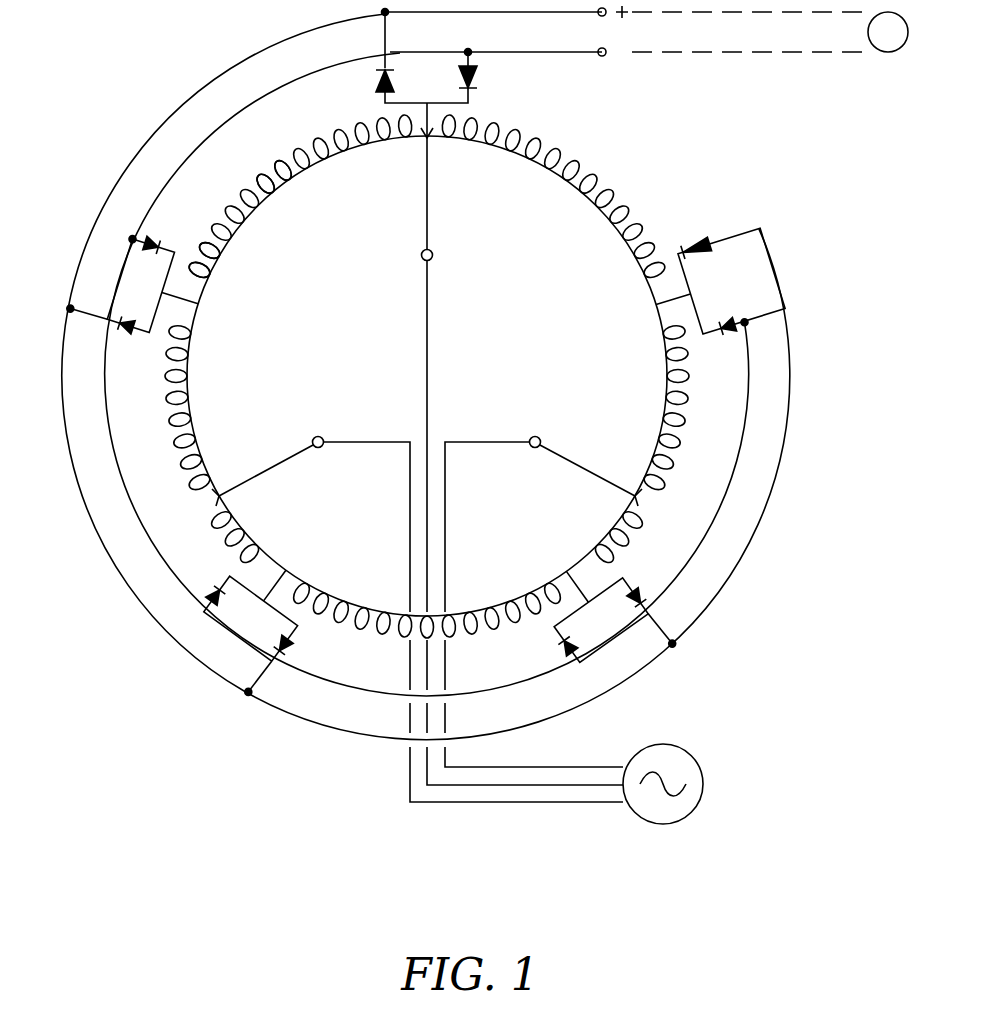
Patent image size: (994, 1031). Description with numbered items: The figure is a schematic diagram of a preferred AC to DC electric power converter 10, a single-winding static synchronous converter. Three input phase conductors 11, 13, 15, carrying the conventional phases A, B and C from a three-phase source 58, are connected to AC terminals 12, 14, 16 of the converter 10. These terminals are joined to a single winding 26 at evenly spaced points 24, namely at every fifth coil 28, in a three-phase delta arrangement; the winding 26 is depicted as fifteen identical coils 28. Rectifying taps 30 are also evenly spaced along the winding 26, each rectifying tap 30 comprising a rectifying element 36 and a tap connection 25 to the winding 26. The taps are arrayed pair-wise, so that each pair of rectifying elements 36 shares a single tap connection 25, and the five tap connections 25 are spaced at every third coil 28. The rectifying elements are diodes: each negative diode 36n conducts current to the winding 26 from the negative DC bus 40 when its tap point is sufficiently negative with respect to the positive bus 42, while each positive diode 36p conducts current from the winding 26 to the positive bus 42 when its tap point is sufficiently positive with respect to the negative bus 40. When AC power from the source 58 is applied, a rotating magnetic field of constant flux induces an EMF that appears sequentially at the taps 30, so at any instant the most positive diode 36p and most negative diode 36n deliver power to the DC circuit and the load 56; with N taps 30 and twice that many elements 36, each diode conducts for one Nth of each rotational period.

The AC to DC electric power converter 10 is at (180, 692).
The input phase conductor 11 is at (430, 193).
The AC terminal 12 is at (421, 254).
The input phase conductor 13 is at (587, 468).
The AC terminal 14 is at (540, 442).
The input phase conductor 15 is at (278, 460).
The AC terminal 16 is at (318, 437).
The evenly spaced point 24 is at (432, 142).
The tap connection 25 is at (193, 302).
The single winding 26 is at (220, 258).
The coil 28 is at (275, 184).
The rectifying tap 30 is at (486, 81).
The rectifying element 36 is at (130, 248).
The positive diode 36p is at (690, 240).
The negative diode 36n is at (812, 262).
The negative DC bus 40 is at (580, 53).
The positive bus 42 is at (713, 607).
The load 56 is at (888, 52).
The source 58 is at (685, 748).